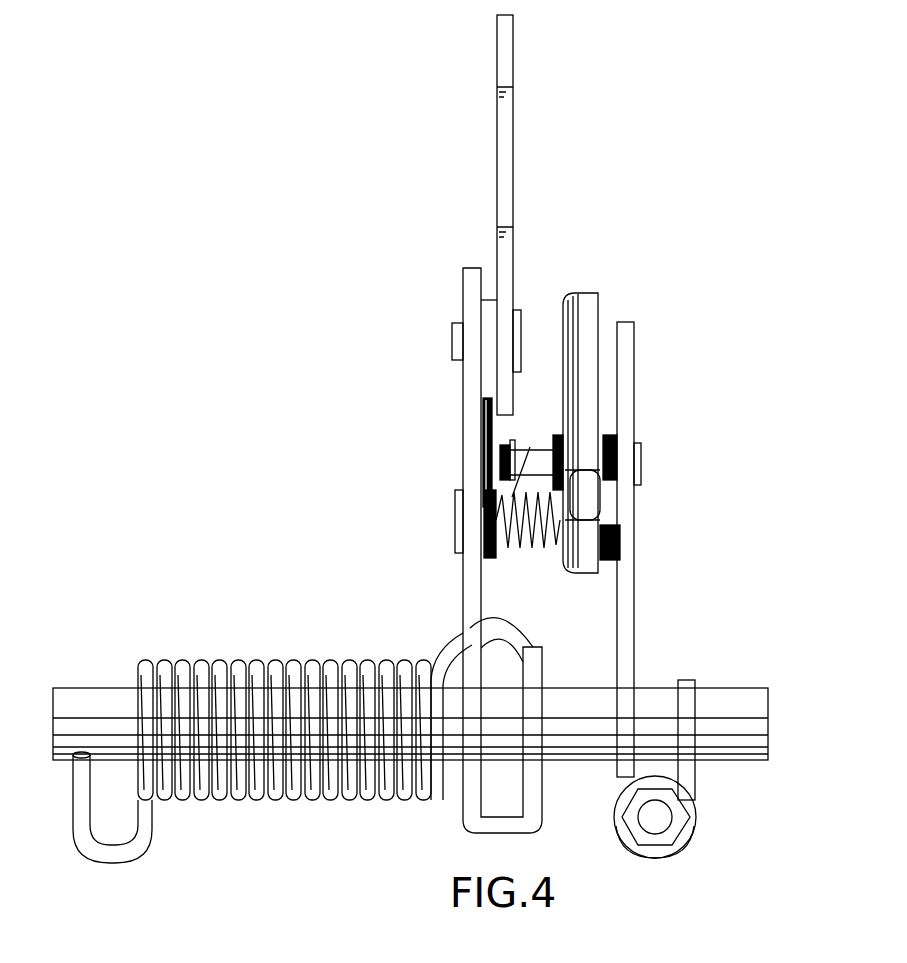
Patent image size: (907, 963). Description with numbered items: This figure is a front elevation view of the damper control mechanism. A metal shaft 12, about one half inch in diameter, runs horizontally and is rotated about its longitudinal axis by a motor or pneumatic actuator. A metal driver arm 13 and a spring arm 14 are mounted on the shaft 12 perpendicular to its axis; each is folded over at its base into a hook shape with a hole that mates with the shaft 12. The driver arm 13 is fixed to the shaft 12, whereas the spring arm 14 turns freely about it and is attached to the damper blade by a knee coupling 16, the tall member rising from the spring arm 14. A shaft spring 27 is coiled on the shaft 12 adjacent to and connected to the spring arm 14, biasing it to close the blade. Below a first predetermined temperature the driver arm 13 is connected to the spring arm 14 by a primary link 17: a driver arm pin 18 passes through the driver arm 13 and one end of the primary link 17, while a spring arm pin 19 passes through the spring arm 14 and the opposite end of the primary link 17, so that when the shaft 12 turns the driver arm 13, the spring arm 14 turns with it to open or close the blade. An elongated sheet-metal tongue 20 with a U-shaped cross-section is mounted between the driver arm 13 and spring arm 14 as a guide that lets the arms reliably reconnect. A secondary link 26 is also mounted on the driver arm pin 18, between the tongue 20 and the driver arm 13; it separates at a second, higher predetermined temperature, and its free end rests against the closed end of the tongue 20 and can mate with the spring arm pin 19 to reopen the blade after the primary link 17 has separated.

The metal shaft 12 is at (768, 730).
The driver arm 13 is at (633, 602).
The spring arm 14 is at (463, 590).
The knee coupling 16 is at (495, 139).
The primary link 17 is at (490, 495).
The driver arm pin 18 is at (617, 437).
The spring arm pin 19 is at (455, 517).
The tongue 20 is at (592, 292).
The secondary link 26 is at (630, 523).
The shaft spring 27 is at (283, 660).